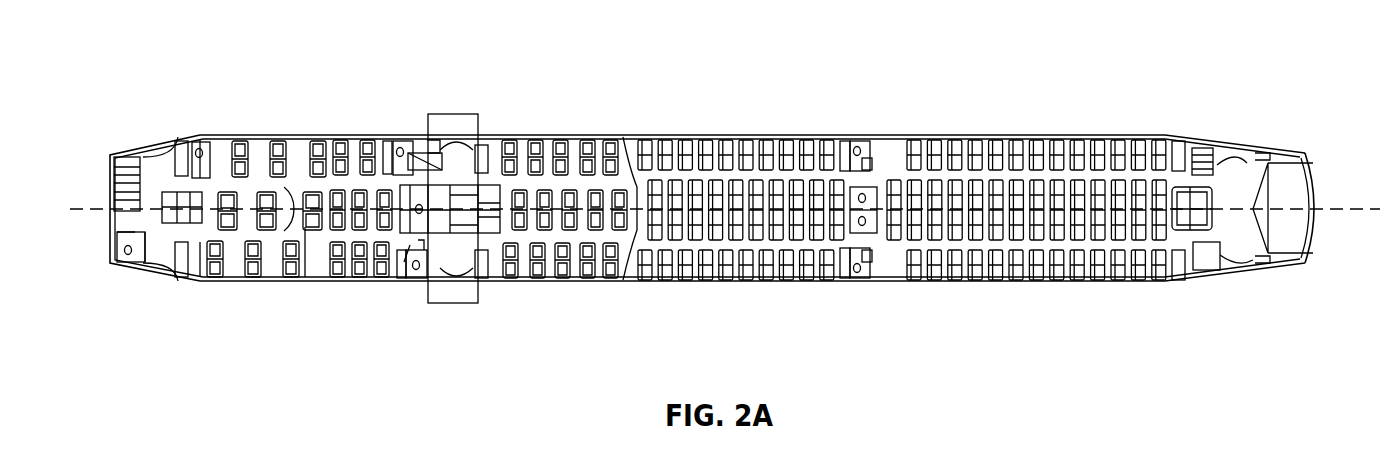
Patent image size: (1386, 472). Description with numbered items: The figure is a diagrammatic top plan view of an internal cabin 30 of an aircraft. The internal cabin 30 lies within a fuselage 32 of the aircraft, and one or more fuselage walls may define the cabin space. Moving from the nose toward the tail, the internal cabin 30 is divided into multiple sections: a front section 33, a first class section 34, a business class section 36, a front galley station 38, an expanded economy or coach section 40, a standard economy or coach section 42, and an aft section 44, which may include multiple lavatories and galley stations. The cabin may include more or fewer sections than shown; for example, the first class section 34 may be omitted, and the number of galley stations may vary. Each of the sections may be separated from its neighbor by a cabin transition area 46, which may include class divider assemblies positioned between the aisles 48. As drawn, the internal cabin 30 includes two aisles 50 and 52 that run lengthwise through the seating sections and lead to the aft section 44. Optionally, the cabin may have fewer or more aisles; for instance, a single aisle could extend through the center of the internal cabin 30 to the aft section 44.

The internal cabin 30 is at (245, 40).
The fuselage 32 is at (576, 98).
The front section 33 is at (168, 297).
The first class section 34 is at (262, 284).
The business class section 36 is at (333, 134).
The front galley station 38 is at (452, 298).
The expanded economy or coach section 40 is at (552, 284).
The standard economy or coach section 42 is at (683, 136).
The aft section 44 is at (1243, 165).
The cabin transition area 46 is at (183, 133).
The aisles 48 is at (397, 132).
The aisle 50 is at (1038, 175).
The aisle 52 is at (1057, 243).